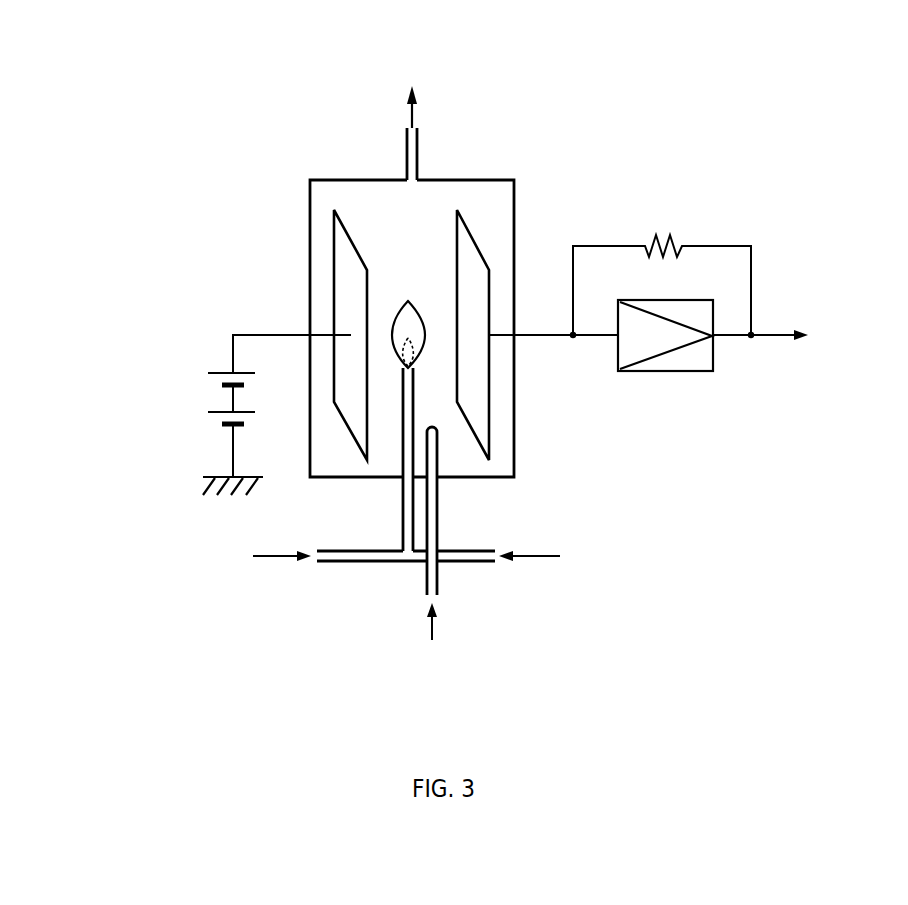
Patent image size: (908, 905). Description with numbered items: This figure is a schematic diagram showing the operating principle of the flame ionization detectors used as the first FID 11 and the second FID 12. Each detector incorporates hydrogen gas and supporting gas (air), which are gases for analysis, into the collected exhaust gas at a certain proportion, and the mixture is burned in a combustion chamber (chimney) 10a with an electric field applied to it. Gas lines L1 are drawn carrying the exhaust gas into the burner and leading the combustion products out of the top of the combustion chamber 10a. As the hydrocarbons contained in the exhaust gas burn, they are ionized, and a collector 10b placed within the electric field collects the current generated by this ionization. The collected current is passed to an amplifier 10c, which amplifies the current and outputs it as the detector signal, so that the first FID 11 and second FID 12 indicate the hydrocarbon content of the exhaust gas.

The first FID 11 is at (176, 104).
The second FID 12 is at (543, 375).
The combustion chamber 10a is at (330, 180).
The collector 10b is at (478, 247).
The amplifier 10c is at (665, 371).
The pipe line L1 is at (418, 143).